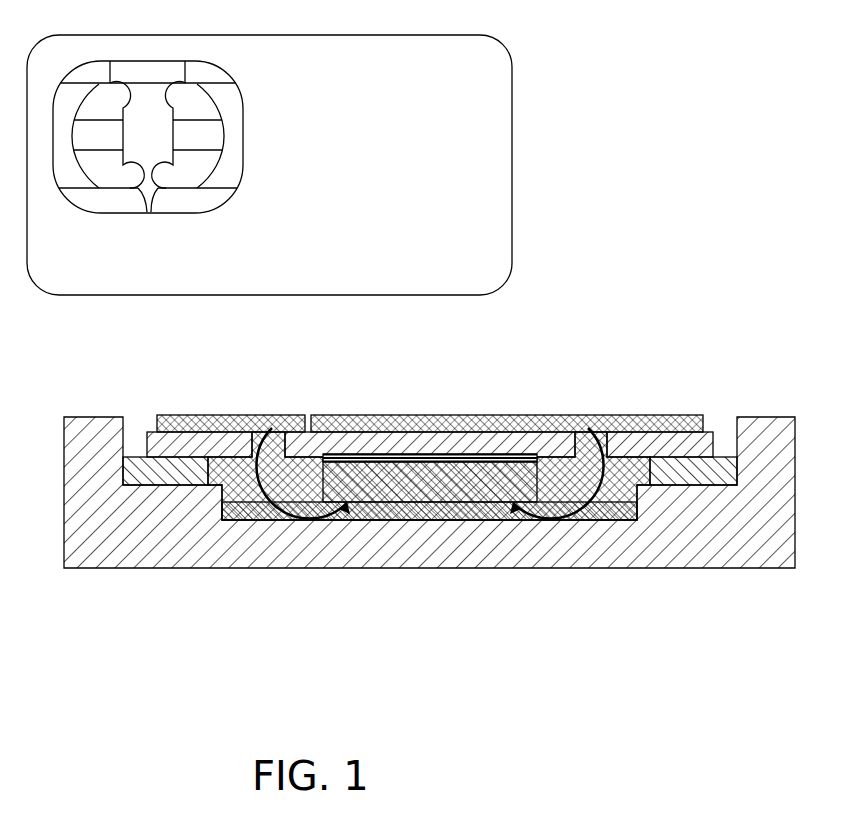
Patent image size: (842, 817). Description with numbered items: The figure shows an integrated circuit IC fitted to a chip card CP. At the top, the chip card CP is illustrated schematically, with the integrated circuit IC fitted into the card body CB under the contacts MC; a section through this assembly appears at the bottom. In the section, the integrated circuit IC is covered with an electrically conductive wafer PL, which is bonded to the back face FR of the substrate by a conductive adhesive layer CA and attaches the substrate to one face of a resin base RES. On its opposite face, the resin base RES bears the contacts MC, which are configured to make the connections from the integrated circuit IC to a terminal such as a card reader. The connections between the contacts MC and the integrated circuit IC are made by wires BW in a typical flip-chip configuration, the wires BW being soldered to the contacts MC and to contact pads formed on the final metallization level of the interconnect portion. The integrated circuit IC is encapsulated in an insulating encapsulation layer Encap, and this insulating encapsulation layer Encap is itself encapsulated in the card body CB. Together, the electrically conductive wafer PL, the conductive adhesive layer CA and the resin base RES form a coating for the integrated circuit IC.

The chip card CP is at (498, 161).
The contacts MC is at (185, 110).
The card body CB is at (148, 569).
The back face of the substrate FR is at (372, 415).
The insulating encapsulation layer Encap is at (265, 500).
The resin base RES is at (482, 520).
The electrically conductive wafer PL is at (467, 440).
The integrated circuit IC is at (377, 458).
The conductive adhesive layer CA is at (485, 452).
The wires BW is at (565, 512).